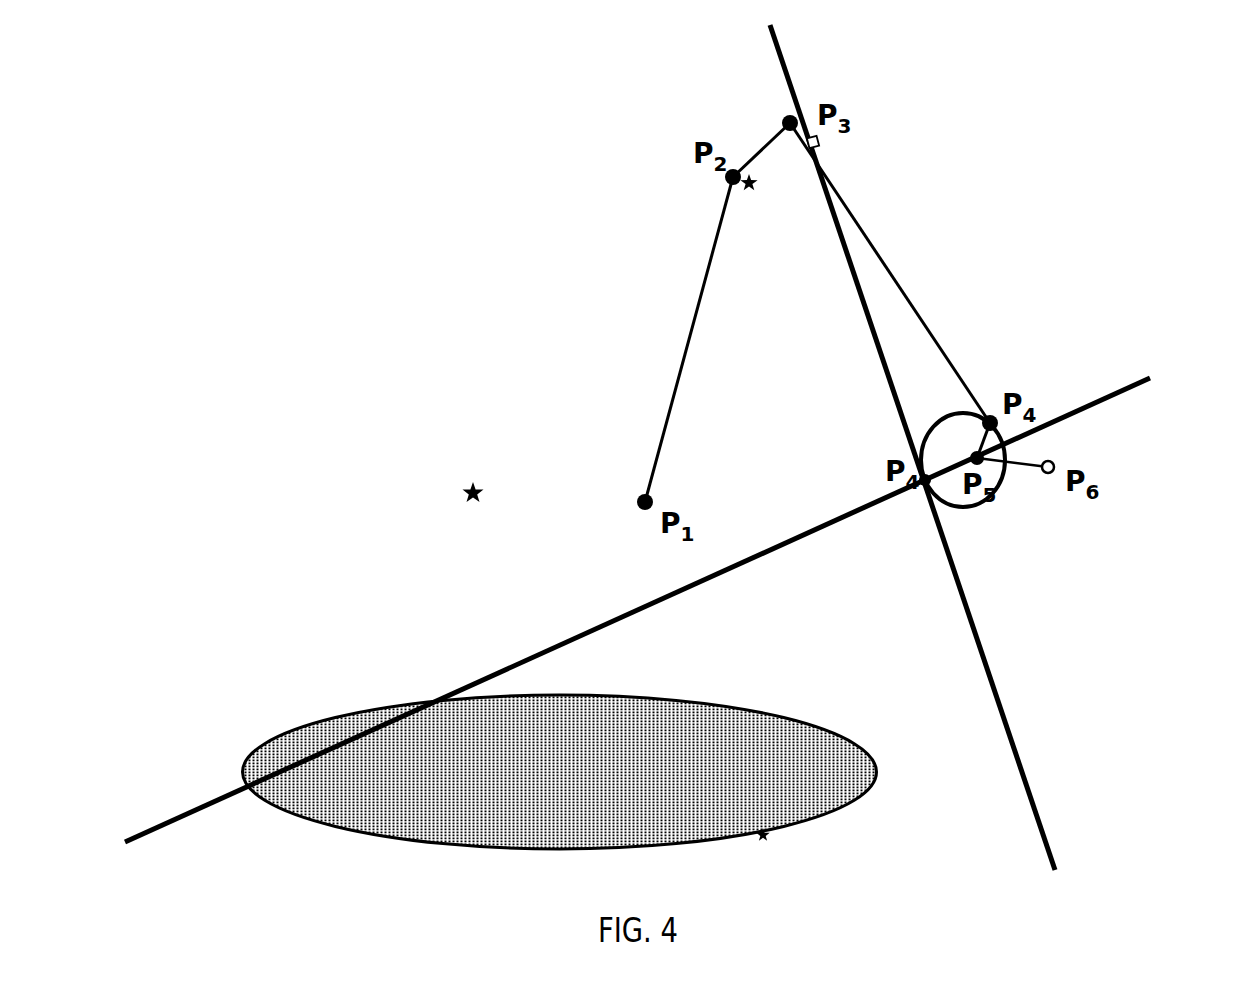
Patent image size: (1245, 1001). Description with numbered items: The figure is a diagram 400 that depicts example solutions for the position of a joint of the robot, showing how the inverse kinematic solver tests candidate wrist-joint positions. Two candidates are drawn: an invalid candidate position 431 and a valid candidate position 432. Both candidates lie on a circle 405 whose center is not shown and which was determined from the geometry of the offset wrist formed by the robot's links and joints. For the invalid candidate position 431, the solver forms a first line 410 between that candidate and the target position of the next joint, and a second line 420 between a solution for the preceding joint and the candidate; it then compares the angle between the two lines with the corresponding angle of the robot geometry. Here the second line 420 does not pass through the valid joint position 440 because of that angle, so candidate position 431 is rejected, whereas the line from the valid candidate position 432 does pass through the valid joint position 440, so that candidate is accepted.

The diagram 400 is at (410, 302).
The circle 405 is at (1018, 502).
The Line45 410 is at (580, 599).
The Line34 420 is at (1052, 712).
The invalid candidate position of P4 431 is at (915, 507).
The valid candidate position of P4 432 is at (994, 395).
The valid position of P3 440 is at (764, 118).